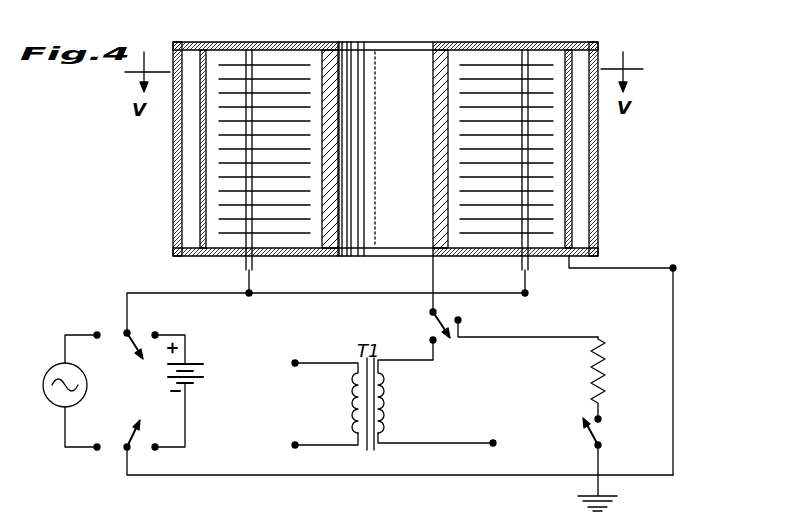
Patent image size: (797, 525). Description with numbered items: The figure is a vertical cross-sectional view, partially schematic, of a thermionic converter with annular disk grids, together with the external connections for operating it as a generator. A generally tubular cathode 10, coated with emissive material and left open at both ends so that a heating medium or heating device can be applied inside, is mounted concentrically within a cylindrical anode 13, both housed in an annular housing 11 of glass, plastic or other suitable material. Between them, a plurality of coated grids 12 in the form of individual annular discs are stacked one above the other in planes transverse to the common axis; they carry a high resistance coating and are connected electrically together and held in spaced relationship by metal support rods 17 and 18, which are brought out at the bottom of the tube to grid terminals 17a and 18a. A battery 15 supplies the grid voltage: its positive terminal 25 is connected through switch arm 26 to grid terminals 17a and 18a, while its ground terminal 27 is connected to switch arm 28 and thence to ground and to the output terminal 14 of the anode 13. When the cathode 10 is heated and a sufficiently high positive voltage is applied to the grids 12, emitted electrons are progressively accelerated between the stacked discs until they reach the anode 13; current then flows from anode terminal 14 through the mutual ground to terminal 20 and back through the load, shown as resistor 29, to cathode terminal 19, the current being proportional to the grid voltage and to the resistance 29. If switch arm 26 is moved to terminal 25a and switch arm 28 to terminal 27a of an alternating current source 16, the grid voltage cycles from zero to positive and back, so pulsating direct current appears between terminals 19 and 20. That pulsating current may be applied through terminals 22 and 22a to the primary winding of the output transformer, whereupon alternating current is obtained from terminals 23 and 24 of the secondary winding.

The cathode 10 is at (443, 62).
The annular housing 11 is at (217, 46).
The coated grids 12 is at (487, 62).
The anode 13 is at (202, 180).
The output terminal 14 is at (674, 267).
The battery 15 is at (195, 364).
The alternating current source 16 is at (52, 400).
The metal support rod 17 is at (253, 266).
The grid terminal 17a is at (251, 295).
The metal support rod 18 is at (521, 260).
The grid terminal 18a is at (527, 295).
The cathode terminal 19 is at (441, 323).
The anode terminal 20 is at (597, 432).
The primary winding terminal 22 is at (493, 440).
The primary winding terminal 22a is at (431, 340).
The secondary winding terminal 23 is at (294, 441).
The secondary winding terminal 24 is at (295, 360).
The positive terminal 25 is at (155, 332).
The alternating current source terminal 25a is at (103, 312).
The switch arm 26 is at (133, 345).
The ground terminal 27 is at (156, 445).
The alternating current source terminal 27a is at (97, 450).
The switch arm 28 is at (128, 440).
The resistor 29 is at (602, 373).